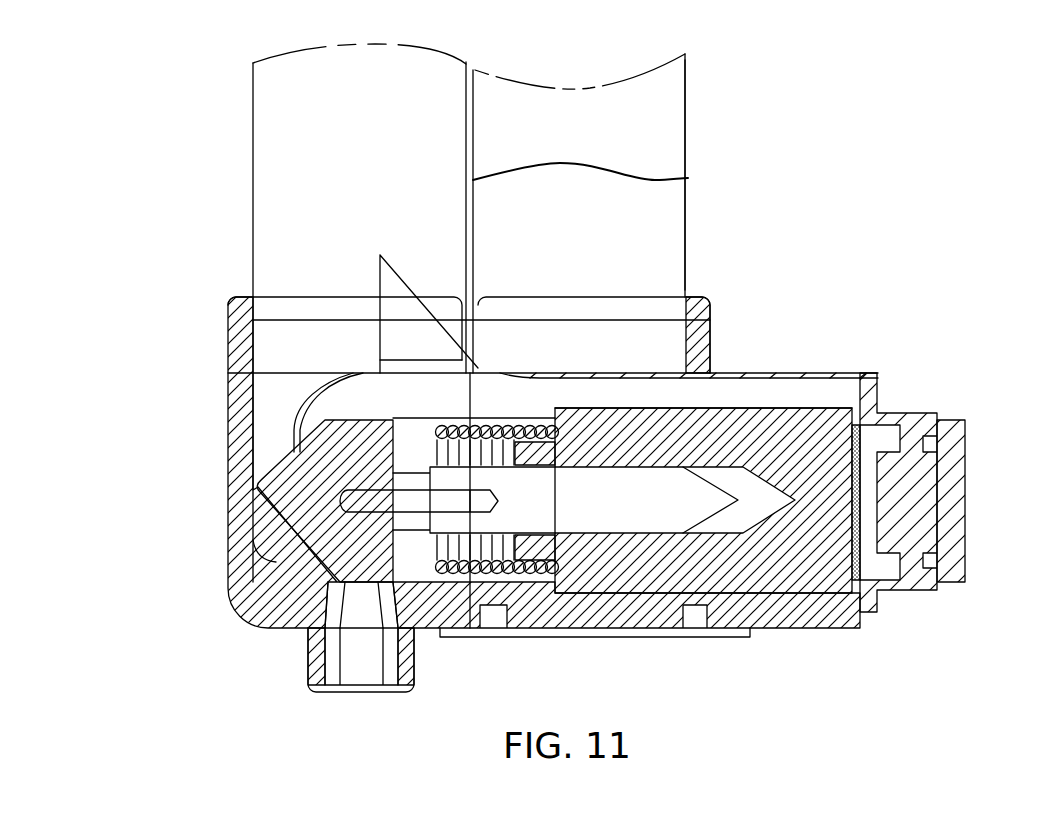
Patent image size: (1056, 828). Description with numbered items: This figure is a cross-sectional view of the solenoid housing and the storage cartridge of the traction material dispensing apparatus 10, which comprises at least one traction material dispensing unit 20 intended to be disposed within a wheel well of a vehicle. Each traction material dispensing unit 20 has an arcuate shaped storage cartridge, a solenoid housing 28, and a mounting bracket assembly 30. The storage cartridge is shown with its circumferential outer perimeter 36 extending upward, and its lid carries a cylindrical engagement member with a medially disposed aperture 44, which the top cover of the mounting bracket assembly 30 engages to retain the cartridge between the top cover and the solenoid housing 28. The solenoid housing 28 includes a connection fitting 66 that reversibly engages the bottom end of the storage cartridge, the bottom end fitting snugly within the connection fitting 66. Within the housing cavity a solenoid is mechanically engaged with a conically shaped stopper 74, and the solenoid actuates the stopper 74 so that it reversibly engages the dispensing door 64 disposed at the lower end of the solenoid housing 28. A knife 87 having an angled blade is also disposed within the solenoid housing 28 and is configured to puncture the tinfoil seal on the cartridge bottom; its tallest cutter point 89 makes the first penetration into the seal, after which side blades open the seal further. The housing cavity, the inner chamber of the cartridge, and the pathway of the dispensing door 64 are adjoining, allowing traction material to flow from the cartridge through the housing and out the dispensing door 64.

The traction material dispensing apparatus 10 is at (972, 149).
The traction material dispensing unit 20 is at (688, 71).
The circumferential outer perimeter 36 is at (685, 128).
The mounting bracket assembly 30 is at (688, 178).
The aperture 44 is at (622, 320).
The connection fitting 66 is at (697, 330).
The tallest cutter point 89 is at (378, 262).
The knife 87 is at (374, 283).
The stopper 74 is at (268, 491).
The solenoid housing 28 is at (872, 372).
The dispensing door 64 is at (410, 681).